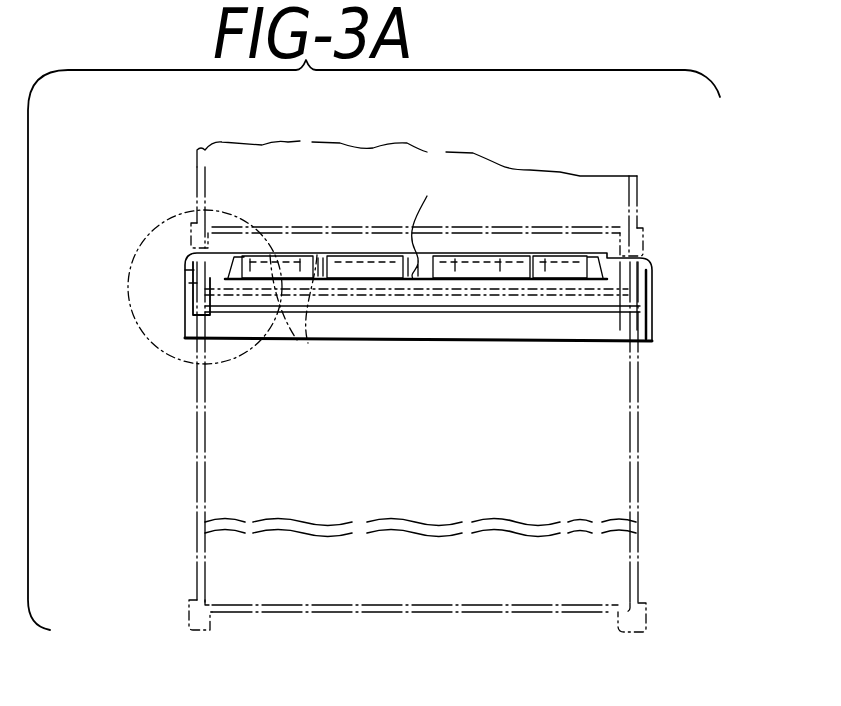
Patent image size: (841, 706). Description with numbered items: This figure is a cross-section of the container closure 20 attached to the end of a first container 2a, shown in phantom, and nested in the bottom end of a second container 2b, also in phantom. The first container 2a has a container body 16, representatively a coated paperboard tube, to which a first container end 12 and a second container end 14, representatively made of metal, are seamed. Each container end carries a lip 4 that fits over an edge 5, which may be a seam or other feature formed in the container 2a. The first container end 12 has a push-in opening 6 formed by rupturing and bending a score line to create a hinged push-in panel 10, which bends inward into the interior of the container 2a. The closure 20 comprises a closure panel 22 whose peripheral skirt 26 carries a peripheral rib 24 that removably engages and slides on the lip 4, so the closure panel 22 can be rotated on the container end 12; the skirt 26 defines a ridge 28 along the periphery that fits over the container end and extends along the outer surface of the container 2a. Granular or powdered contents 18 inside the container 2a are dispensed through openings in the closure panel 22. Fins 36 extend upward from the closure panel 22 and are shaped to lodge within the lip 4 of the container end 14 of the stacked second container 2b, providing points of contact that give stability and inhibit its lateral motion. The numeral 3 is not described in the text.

The first container 2a is at (184, 493).
The second container 2b is at (366, 170).
The rim 3 is at (280, 240).
The lip 4 is at (147, 257).
The edge 5 is at (185, 270).
The push-in opening 6 is at (270, 325).
The hinged push-in panel 10 is at (284, 342).
The first container end 12 is at (193, 360).
The second container end 14 is at (281, 245).
The container body 16 is at (640, 420).
The contents 18 is at (600, 556).
The container closure 20 is at (680, 272).
The closure panel 22 is at (517, 276).
The peripheral rib 24 is at (593, 312).
The peripheral skirt 26 is at (653, 320).
The ridge 28 is at (643, 260).
The fins 36 is at (464, 262).